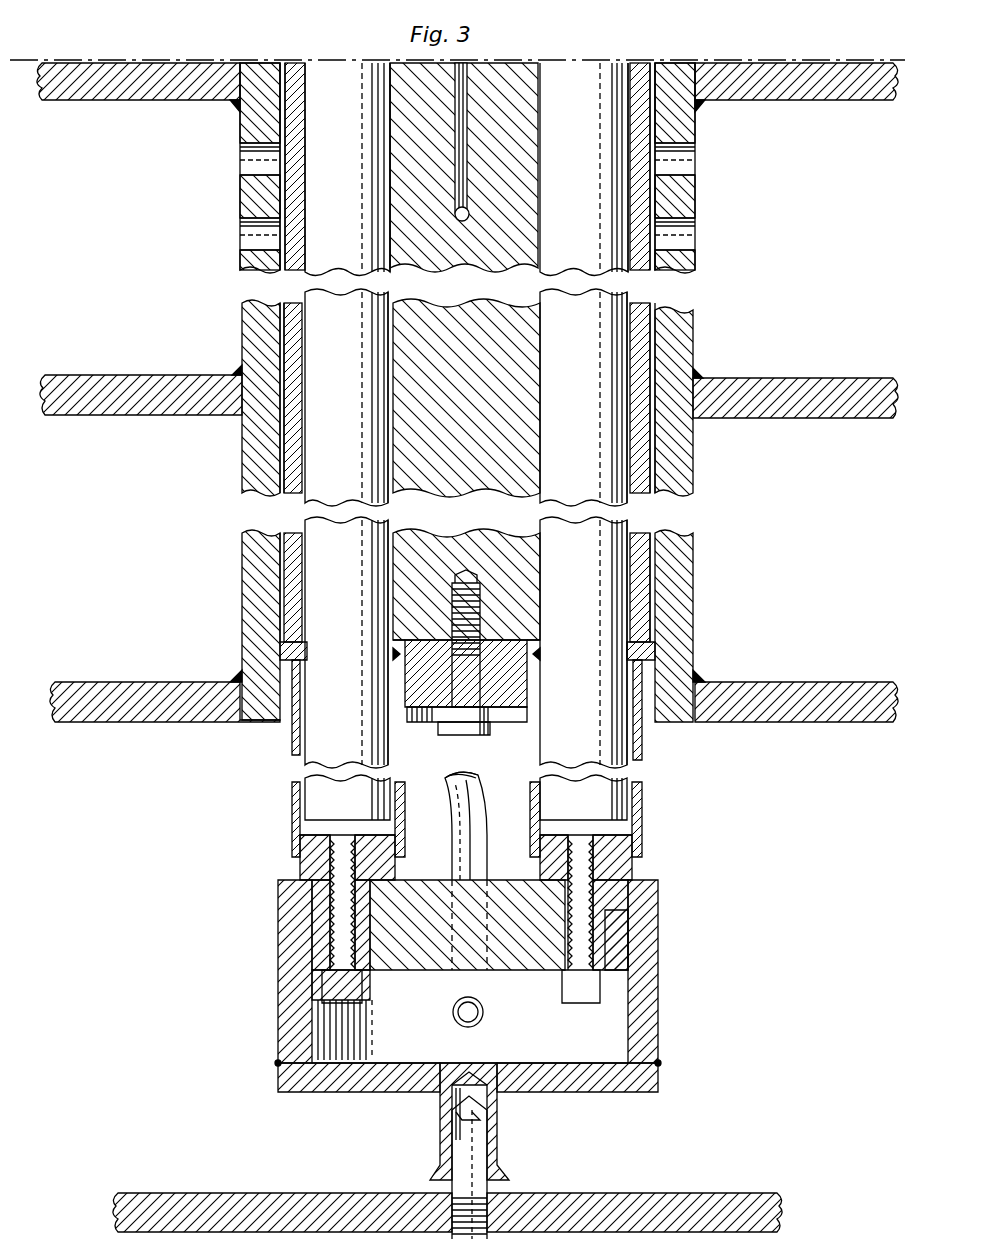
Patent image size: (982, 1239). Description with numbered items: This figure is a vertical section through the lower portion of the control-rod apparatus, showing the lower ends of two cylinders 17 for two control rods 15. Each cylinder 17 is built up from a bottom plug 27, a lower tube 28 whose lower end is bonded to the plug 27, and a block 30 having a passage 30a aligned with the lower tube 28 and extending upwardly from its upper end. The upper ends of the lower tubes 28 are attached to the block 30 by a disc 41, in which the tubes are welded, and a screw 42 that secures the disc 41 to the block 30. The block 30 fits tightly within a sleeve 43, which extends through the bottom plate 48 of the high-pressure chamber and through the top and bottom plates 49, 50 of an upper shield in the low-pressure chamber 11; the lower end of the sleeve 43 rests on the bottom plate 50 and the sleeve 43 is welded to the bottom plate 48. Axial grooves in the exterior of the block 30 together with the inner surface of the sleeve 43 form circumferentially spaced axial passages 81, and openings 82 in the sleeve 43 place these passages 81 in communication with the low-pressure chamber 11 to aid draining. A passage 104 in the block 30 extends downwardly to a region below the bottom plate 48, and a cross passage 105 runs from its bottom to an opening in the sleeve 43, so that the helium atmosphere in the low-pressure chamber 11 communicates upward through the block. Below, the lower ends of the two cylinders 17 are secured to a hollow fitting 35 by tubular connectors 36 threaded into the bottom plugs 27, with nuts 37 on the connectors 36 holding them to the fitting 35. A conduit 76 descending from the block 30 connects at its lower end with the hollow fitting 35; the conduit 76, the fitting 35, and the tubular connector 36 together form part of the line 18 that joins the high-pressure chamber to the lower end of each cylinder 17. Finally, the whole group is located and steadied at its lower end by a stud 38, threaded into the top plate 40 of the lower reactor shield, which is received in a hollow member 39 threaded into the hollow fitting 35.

The low-pressure chamber 11 is at (122, 218).
The control rod 15 is at (335, 728).
The cylinder 17 is at (648, 782).
The line 18 is at (491, 856).
The bottom plug 27 is at (642, 870).
The lower tube 28 is at (643, 808).
The block 30 is at (484, 260).
The passage 30a is at (600, 566).
The hollow fitting 35 is at (650, 990).
The tubular connector 36 is at (600, 938).
The nut 37 is at (300, 1010).
The stud 38 is at (492, 1186).
The hollow member 39 is at (498, 1125).
The top plate 40 is at (704, 1190).
The disc 41 is at (428, 723).
The screw 42 is at (470, 725).
The sleeve 43 is at (676, 450).
The bottom plate 48 is at (120, 64).
The top plate 49 is at (108, 412).
The bottom plate 50 is at (144, 652).
The conduit 76 is at (465, 800).
The axial passage 81 is at (284, 190).
The opening 82 is at (242, 152).
The passage 104 is at (458, 89).
The cross passage 105 is at (455, 214).